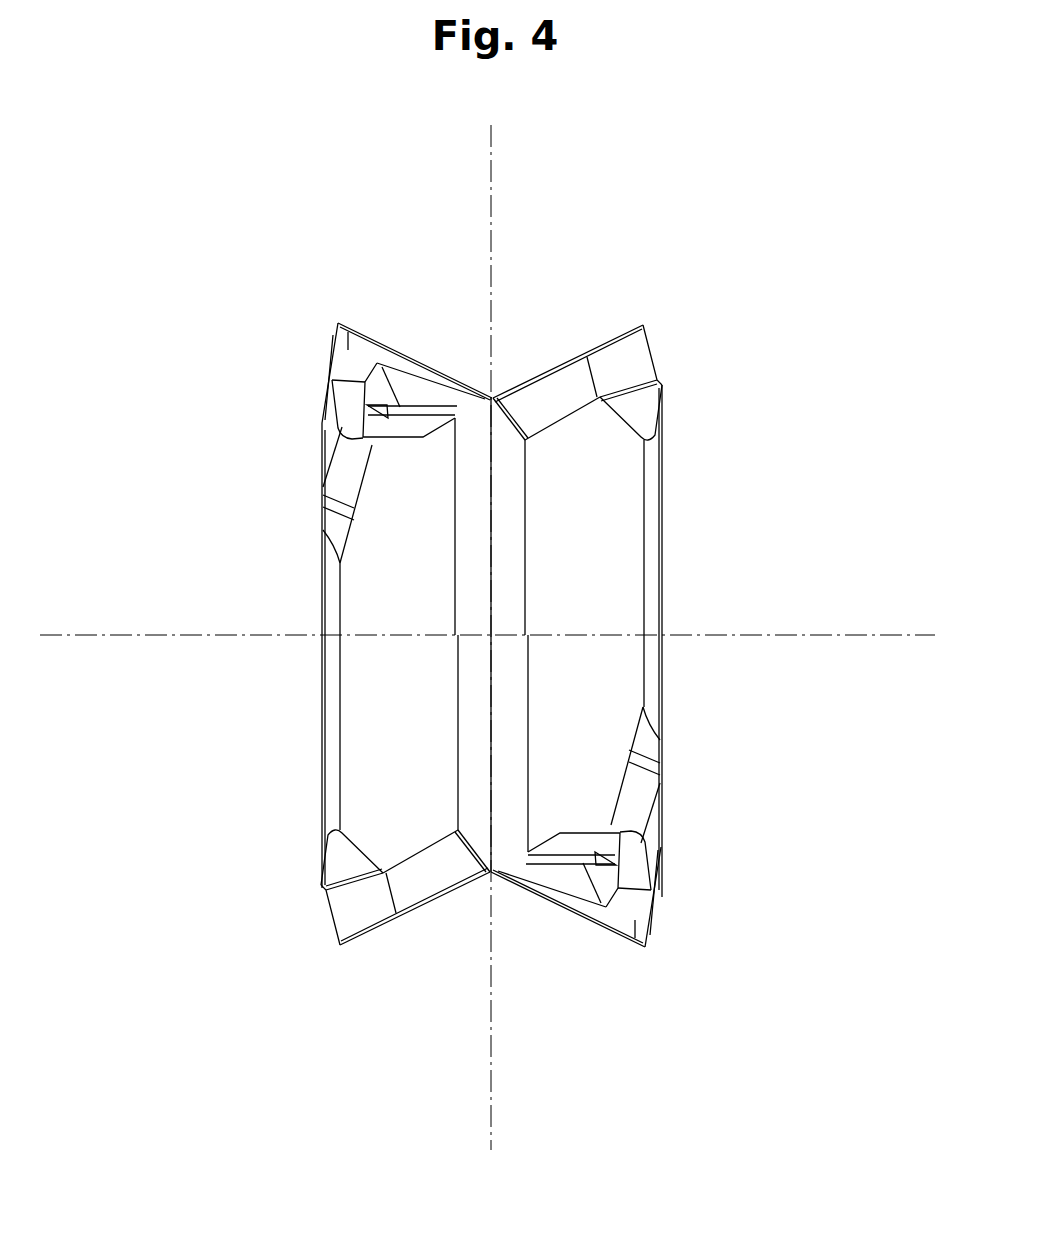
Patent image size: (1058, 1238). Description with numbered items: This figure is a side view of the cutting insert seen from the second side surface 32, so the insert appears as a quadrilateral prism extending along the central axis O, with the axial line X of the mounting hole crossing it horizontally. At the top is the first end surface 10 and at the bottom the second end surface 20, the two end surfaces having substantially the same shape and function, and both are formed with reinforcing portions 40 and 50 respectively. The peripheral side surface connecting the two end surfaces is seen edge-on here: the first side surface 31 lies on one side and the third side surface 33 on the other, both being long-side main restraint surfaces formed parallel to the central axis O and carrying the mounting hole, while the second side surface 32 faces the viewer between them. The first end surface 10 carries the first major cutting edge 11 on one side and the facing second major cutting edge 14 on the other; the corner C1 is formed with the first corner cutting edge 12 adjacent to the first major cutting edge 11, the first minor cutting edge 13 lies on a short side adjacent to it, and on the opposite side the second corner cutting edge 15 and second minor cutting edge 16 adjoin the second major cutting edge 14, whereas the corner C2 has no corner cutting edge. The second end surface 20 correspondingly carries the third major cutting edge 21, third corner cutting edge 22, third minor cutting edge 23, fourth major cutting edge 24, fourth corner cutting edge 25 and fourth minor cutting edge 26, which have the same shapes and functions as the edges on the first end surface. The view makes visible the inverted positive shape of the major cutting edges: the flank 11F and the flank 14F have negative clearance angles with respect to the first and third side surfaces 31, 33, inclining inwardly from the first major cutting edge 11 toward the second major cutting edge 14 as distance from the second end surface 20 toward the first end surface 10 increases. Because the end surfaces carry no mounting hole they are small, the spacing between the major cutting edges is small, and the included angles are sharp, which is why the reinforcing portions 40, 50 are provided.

The central axis O is at (490, 621).
The axial line of the mounting hole X is at (500, 636).
The first end surface 10 is at (388, 372).
The first major cutting edge 11 is at (643, 323).
The flank of the first major cutting edge 11F is at (660, 340).
The first corner cutting edge 12 is at (604, 333).
The first minor cutting edge 13 is at (528, 367).
The second major cutting edge 14 is at (330, 338).
The flank of the second major cutting edge 14F is at (330, 380).
The second corner cutting edge 15 is at (360, 333).
The second minor cutting edge 16 is at (447, 360).
The second end surface 20 is at (583, 895).
The third major cutting edge 21 is at (333, 945).
The third corner cutting edge 22 is at (372, 935).
The third minor cutting edge 23 is at (450, 898).
The fourth major cutting edge 24 is at (655, 912).
The fourth corner cutting edge 25 is at (617, 935).
The fourth minor cutting edge 26 is at (563, 908).
The first side surface 31 is at (664, 683).
The second side surface 32 is at (375, 665).
The third side surface 33 is at (321, 770).
The reinforcing portion 40 is at (404, 396).
The reinforcing portion 50 is at (540, 874).
The corner C1 is at (655, 608).
The corner C2 is at (330, 710).